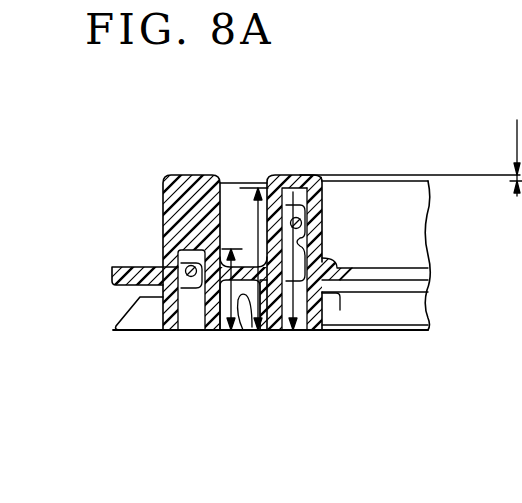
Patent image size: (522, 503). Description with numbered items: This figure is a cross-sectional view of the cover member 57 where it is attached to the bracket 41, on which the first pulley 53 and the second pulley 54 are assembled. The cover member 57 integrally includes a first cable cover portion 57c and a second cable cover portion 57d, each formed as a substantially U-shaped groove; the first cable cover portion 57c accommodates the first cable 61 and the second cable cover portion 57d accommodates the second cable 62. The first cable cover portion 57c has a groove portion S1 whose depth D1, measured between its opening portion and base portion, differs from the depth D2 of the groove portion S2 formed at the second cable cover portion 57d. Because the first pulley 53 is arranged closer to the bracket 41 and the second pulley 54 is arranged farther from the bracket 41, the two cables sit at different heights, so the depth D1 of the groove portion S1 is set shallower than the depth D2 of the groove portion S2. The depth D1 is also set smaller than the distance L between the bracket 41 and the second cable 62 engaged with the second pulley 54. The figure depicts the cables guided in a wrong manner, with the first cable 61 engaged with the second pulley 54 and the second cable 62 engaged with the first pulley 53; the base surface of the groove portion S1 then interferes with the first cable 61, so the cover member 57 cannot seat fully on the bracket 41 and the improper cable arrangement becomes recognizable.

The cover member 57 is at (398, 186).
The first cable cover portion 57c is at (190, 177).
The second cable cover portion 57d is at (289, 177).
The second pulley 54 is at (310, 192).
The second cable 62 is at (304, 224).
The first pulley 53 is at (190, 233).
The first cable 61 is at (172, 265).
The bracket 41 is at (358, 332).
The groove portion S1 is at (182, 334).
The groove portion S2 is at (292, 332).
The depth of the groove portion S1 D1 is at (243, 332).
The depth of the groove portion S2 D2 is at (254, 207).
The distance between the bracket and the second cable L is at (326, 304).